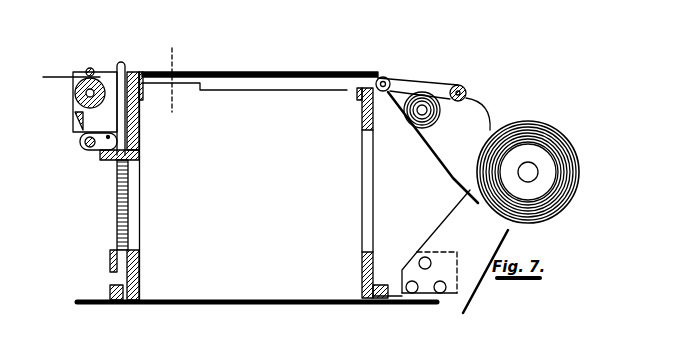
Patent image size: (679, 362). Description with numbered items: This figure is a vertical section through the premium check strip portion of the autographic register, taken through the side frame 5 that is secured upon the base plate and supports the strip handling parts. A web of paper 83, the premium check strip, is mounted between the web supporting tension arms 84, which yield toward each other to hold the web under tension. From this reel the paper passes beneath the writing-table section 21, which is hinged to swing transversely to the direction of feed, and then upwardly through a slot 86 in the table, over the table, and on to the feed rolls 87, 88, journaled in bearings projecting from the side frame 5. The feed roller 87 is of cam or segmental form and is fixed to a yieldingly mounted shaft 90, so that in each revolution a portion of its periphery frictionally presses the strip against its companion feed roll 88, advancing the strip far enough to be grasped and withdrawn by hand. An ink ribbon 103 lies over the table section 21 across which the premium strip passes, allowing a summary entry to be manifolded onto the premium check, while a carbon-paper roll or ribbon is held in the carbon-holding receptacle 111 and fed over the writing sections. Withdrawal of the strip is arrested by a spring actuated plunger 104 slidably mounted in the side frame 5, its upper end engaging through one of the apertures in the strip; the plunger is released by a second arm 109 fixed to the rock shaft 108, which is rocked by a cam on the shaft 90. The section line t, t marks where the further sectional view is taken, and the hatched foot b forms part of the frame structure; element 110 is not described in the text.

The side frame 5 is at (145, 266).
The writing-table section 21 is at (393, 120).
The web of paper 83 is at (580, 177).
The web supporting tension arm 84 is at (463, 213).
The slot 86 is at (210, 69).
The feed roller 87 is at (96, 78).
The feed roll 88 is at (90, 68).
The shaft 90 is at (73, 93).
The ink ribbon 103 is at (178, 71).
The plunger 104 is at (125, 153).
The rock shaft 108 is at (83, 144).
The second arm 109 is at (100, 149).
The roller 110 is at (468, 96).
The carbon-holding receptacle 111 is at (431, 116).
The wall block b is at (362, 258).
The section line t t is at (171, 81).